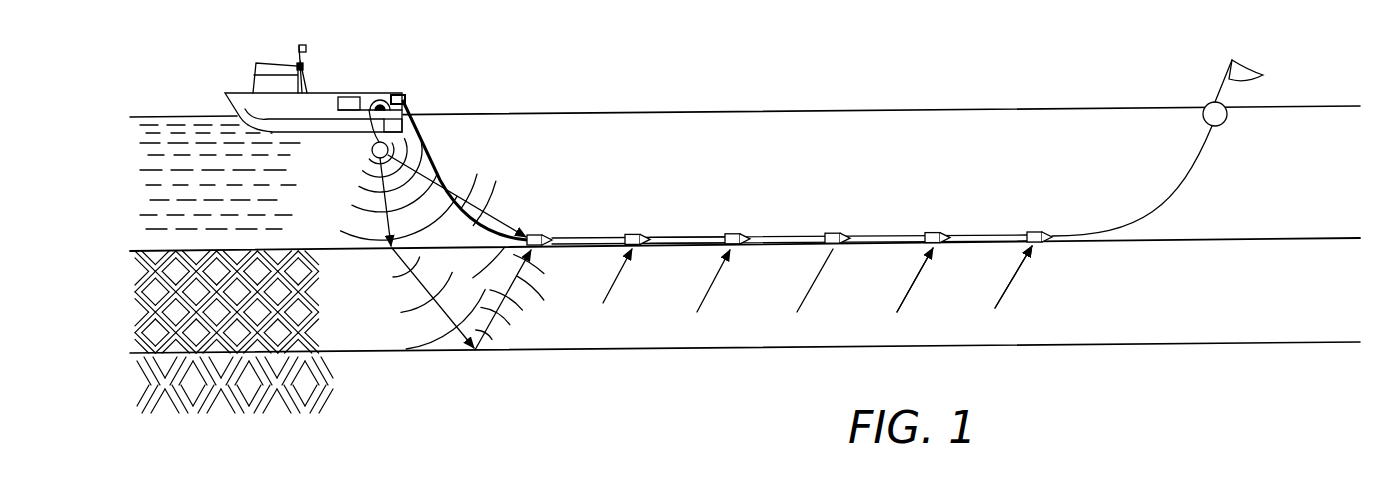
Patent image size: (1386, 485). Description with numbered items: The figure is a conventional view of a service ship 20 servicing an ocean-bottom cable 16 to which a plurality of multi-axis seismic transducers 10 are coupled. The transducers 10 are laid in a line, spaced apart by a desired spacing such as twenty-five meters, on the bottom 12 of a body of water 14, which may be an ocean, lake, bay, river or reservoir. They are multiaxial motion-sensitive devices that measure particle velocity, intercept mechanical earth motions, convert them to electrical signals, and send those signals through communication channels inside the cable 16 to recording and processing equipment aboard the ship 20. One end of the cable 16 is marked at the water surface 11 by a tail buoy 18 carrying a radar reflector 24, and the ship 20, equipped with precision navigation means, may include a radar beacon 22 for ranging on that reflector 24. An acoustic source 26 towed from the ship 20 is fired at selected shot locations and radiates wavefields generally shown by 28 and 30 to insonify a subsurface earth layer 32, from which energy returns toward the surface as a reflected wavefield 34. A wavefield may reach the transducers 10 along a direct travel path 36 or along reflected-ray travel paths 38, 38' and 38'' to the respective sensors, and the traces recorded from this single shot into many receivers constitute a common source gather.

The seismic transducers 10 is at (1038, 231).
The water surface 11 is at (1305, 103).
The bottom of a body of water 12 is at (1305, 237).
The body of water 14 is at (921, 152).
The ocean-bottom cable 16 is at (698, 237).
The buoy 18 is at (1226, 126).
The service ship 20 is at (237, 92).
The radar beacon 22 is at (305, 65).
The radar reflector 24 is at (1221, 65).
The source 26 is at (371, 149).
The wavefield 28 is at (541, 162).
The wavefield 30 is at (551, 318).
The subsurface earth layer 32 is at (1305, 340).
The reflected wavefield 34 is at (522, 278).
The direct travel path 36 is at (477, 202).
The reflected-ray travel path 38 is at (417, 253).
The reflected-ray travel path 38' is at (638, 280).
The reflected-ray travel path 38'' is at (738, 281).